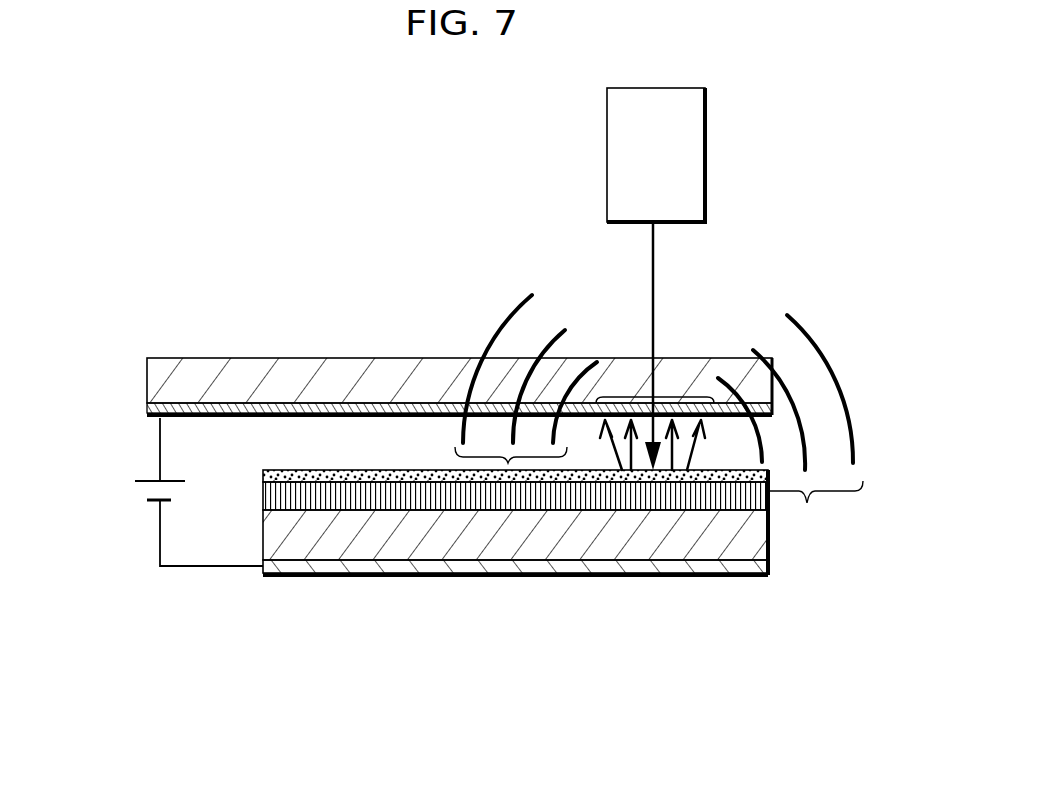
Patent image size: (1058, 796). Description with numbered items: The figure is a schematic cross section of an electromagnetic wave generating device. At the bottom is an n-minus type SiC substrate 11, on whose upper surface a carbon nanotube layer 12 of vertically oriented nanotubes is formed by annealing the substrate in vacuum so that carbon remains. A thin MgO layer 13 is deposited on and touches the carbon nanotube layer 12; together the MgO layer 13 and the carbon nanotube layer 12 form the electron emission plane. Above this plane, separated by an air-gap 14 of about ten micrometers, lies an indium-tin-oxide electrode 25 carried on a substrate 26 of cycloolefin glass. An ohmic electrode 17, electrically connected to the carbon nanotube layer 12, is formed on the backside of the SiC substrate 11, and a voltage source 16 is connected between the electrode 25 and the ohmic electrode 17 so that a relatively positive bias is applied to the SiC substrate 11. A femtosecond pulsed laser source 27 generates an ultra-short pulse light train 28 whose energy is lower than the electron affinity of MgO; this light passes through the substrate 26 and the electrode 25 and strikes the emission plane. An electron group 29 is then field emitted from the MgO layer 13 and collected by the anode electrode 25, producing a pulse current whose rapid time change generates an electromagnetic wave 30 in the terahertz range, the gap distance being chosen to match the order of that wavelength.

The SiC substrate 11 is at (302, 537).
The carbon nanotube layer 12 is at (320, 497).
The MgO layer 13 is at (338, 475).
The air-gap 14 is at (373, 440).
The voltage source 16 is at (133, 492).
The ohmic electrode 17 is at (571, 580).
The electrode 25 is at (340, 404).
The substrate 26 is at (280, 380).
The femtosecond pulsed laser source 27 is at (632, 153).
The ultra-short pulse light train 28 is at (648, 290).
The electron group 29 is at (659, 397).
The electromagnetic wave 30 is at (508, 463).